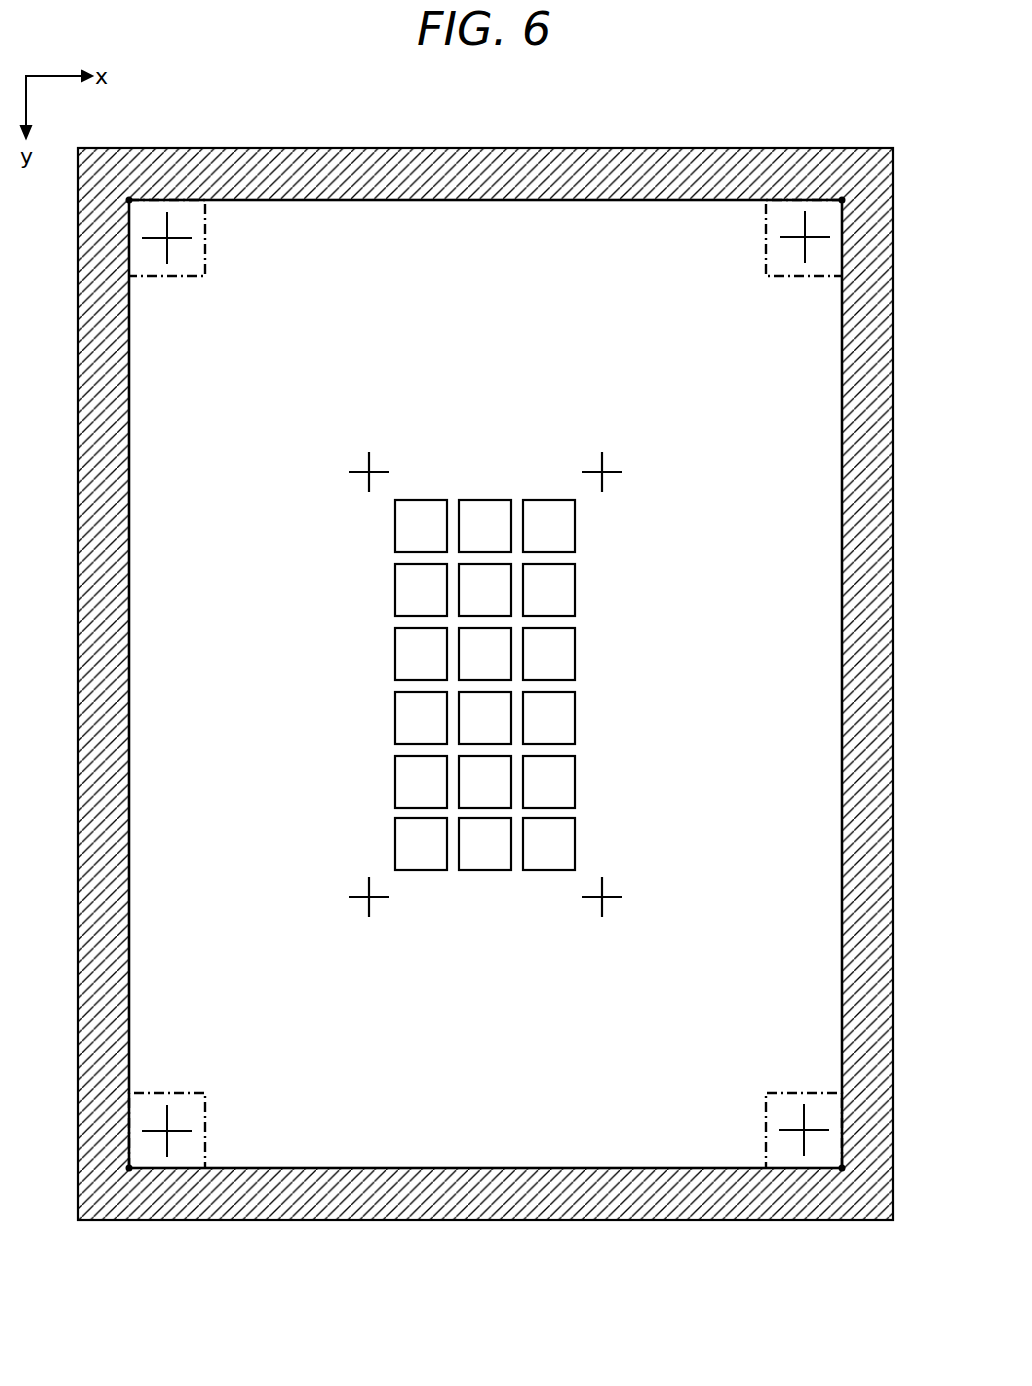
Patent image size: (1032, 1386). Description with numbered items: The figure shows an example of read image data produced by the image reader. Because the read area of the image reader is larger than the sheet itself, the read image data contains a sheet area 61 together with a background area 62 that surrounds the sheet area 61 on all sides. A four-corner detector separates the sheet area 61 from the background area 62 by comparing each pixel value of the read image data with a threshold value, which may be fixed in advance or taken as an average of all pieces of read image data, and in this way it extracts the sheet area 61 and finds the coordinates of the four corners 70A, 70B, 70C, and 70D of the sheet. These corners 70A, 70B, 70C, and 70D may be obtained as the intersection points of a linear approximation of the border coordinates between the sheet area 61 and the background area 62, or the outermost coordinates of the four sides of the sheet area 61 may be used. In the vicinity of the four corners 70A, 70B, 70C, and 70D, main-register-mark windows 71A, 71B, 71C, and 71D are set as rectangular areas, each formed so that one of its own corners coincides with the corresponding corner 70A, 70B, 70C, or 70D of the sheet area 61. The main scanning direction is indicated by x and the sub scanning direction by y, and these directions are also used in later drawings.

The sheet area 61 is at (826, 447).
The background area 62 is at (926, 325).
The corner of the sheet 70A is at (129, 200).
The corner of the sheet 70B is at (842, 200).
The corner of the sheet 70C is at (129, 1168).
The corner of the sheet 70D is at (842, 1168).
The main-register-mark window 71A is at (185, 278).
The main-register-mark window 71B is at (800, 278).
The main-register-mark window 71C is at (178, 1092).
The main-register-mark window 71D is at (790, 1092).